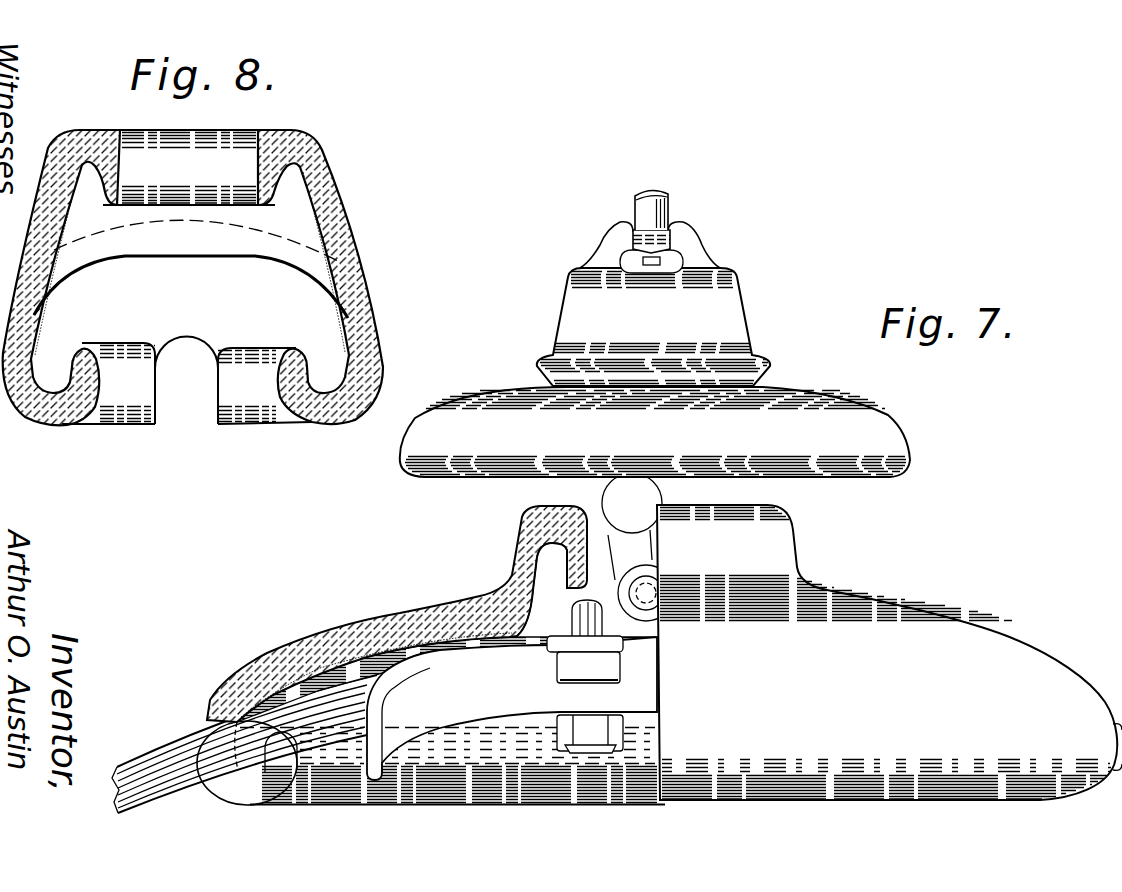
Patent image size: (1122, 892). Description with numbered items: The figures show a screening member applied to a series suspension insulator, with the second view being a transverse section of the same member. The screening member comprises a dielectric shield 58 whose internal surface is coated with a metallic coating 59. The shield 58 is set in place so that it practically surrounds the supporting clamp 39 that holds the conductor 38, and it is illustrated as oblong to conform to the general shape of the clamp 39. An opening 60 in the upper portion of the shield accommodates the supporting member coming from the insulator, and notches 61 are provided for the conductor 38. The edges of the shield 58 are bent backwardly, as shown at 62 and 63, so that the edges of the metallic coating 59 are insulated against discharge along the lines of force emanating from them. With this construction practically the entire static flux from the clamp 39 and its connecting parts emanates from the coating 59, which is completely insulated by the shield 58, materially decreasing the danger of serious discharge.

In FIG. 7, the conductor 38 is at (157, 773).
In FIG. 7, the supporting clamp 39 is at (510, 701).
In FIG. 8, the dielectric shield 58 is at (366, 282).
In FIG. 7, the dielectric shield 58 is at (290, 653).
In FIG. 8, the metallic coating 59 is at (129, 262).
In FIG. 7, the metallic coating 59 is at (374, 664).
In FIG. 8, the opening 60 is at (190, 178).
In FIG. 8, the notches 61 is at (188, 341).
In FIG. 7, the notches 61 is at (210, 728).
In FIG. 7, the backwardly bent edge 62 is at (570, 577).
In FIG. 8, the backwardly bent edge 63 is at (71, 349).